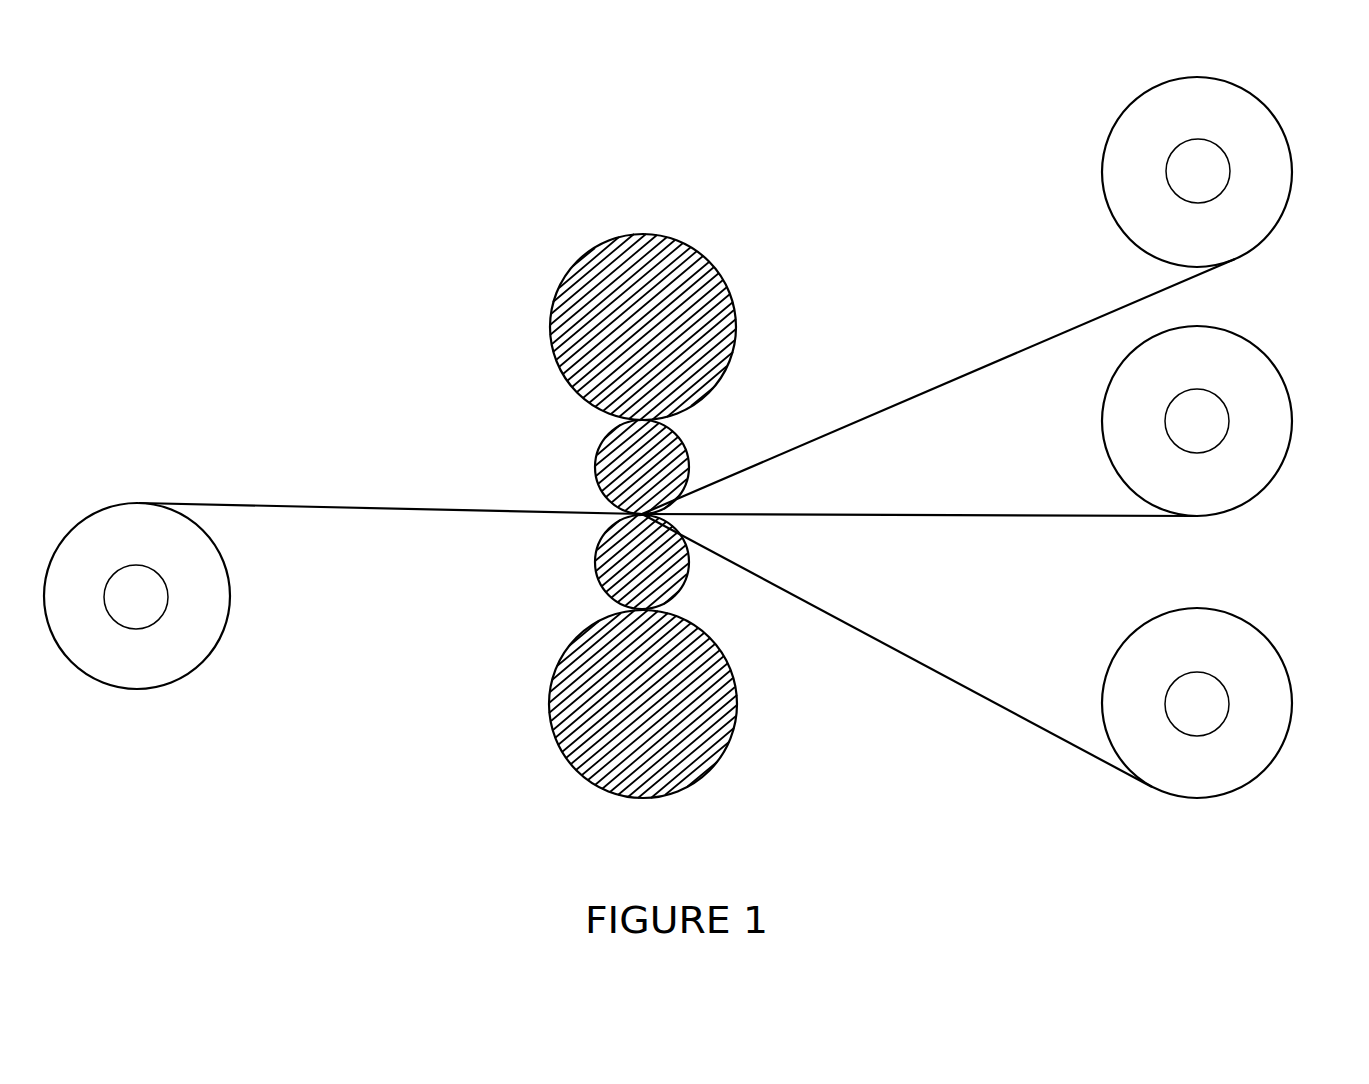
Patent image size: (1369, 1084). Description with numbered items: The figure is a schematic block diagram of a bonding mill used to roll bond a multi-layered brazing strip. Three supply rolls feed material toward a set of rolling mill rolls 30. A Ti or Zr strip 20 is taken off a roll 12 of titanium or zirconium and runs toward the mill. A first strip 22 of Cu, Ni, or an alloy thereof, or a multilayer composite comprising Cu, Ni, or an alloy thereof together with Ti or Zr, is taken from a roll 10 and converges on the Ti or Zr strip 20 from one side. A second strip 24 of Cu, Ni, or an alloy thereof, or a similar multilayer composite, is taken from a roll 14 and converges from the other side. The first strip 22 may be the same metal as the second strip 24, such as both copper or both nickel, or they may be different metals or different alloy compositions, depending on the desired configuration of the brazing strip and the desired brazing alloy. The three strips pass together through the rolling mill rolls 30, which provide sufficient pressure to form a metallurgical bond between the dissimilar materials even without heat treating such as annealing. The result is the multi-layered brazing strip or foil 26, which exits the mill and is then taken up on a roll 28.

The roll 10 is at (1292, 170).
The roll 12 is at (1292, 420).
The roll 14 is at (1292, 703).
The Ti or Zr strip 20 is at (1013, 518).
The first strip 22 is at (898, 405).
The second strip 24 is at (983, 697).
The multi-layered brazing strip or foil 26 is at (333, 503).
The roll 28 is at (139, 690).
The rolls 30 is at (595, 468).